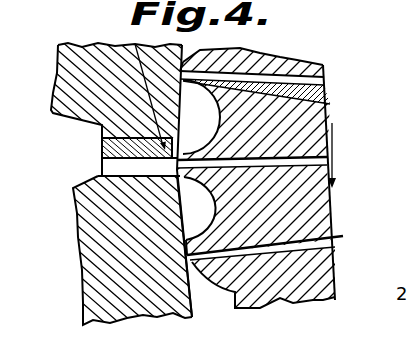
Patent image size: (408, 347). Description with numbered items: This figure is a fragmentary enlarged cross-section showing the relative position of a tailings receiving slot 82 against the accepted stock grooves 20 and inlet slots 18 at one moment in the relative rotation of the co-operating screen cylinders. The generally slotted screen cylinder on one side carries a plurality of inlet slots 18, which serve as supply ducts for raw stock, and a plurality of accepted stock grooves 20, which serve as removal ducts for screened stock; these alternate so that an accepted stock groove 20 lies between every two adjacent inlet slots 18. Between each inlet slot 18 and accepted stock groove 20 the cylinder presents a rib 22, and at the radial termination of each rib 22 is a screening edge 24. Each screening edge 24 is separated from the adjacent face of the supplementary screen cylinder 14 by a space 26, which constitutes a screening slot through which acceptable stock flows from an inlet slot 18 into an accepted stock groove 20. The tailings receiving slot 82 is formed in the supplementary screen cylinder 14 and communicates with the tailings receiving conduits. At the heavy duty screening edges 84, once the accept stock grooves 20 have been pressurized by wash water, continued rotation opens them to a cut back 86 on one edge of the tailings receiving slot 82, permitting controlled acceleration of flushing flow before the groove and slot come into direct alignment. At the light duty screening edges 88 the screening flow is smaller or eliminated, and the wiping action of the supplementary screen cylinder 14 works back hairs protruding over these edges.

The supplementary screen cylinder 14 is at (103, 309).
The inlet slots 18 is at (315, 82).
The accepted stock grooves 20 is at (193, 110).
The ribs 22 is at (269, 98).
The screening edges 24 is at (185, 208).
The space 26 is at (105, 286).
The tailings receiving slot 82 is at (115, 163).
The heavy duty screening edges 84 is at (180, 178).
The cut back 86 is at (101, 131).
The light duty screening edges 88 is at (144, 88).